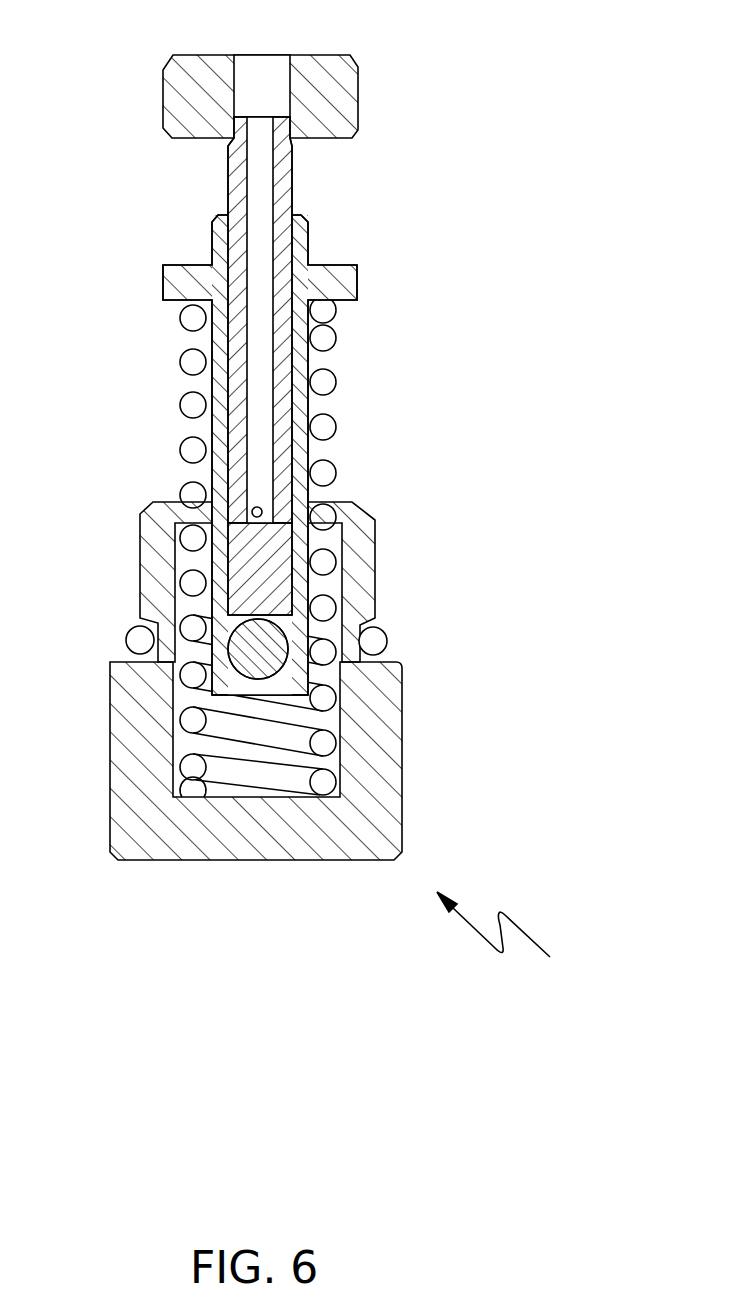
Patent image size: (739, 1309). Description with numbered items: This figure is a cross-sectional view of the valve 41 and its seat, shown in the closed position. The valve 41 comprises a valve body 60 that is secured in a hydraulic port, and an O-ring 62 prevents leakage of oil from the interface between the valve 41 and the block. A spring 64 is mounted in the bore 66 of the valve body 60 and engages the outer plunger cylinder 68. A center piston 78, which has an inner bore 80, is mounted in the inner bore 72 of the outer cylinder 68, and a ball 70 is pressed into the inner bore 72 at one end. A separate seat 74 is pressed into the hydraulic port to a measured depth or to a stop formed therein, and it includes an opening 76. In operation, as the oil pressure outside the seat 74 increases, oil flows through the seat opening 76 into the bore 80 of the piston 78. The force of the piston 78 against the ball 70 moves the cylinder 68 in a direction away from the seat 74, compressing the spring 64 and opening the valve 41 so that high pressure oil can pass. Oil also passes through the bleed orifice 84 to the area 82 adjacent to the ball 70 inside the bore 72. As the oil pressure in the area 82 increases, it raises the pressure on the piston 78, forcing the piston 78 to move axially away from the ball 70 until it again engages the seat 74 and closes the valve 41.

The valve 41 is at (509, 939).
The valve body 60 is at (110, 733).
The O-ring 62 is at (388, 641).
The spring 64 is at (338, 374).
The bore 66 is at (345, 580).
The outer plunger cylinder 68 is at (357, 280).
The ball 70 is at (262, 645).
The inner bore 72 is at (278, 686).
The seat 74 is at (353, 62).
The opening 76 is at (263, 67).
The center piston 78 is at (295, 163).
The inner bore 80 is at (258, 190).
The area 82 is at (245, 612).
The bleed orifice 84 is at (252, 508).